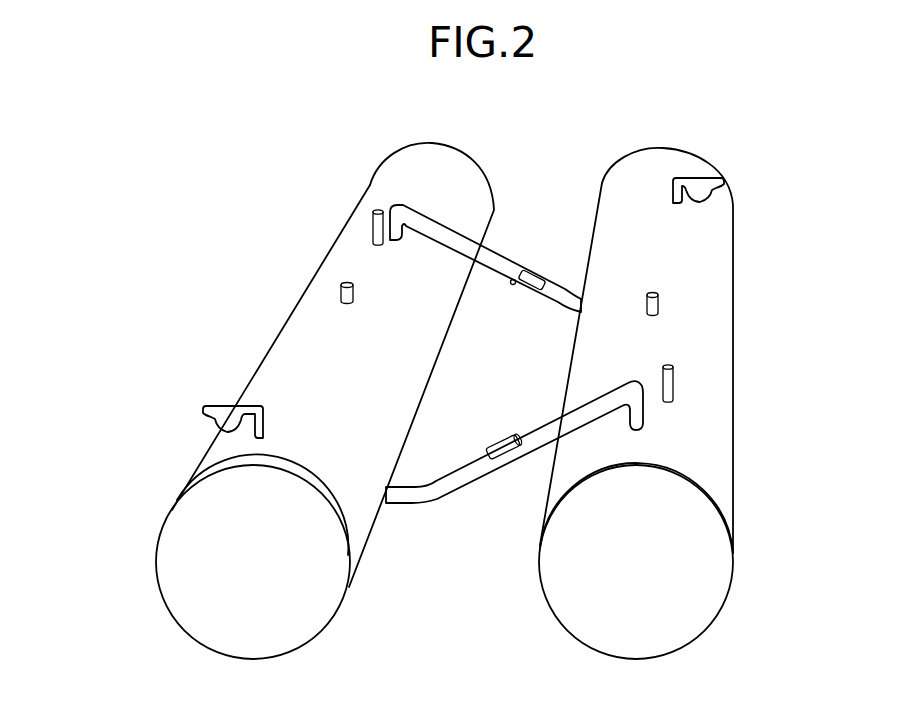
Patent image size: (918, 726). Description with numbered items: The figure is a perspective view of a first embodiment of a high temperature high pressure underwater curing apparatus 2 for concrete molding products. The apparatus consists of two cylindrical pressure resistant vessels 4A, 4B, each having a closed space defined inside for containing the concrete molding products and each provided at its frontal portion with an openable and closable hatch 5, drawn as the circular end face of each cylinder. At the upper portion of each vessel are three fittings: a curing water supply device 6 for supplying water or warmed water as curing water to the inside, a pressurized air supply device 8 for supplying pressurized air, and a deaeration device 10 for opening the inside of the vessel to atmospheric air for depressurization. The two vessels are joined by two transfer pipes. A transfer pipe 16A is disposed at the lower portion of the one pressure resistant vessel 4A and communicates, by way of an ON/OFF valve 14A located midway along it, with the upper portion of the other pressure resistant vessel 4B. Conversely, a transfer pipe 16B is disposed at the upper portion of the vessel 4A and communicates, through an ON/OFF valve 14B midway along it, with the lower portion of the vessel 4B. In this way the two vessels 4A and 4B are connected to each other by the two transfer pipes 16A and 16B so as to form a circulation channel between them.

The high temperature high pressure underwater curing apparatus 2 is at (293, 169).
The pressure resistant vessel 4A is at (287, 320).
The pressure resistant vessel 4B is at (720, 252).
The hatch 5 is at (180, 525).
The curing water supply device 6 is at (373, 228).
The pressurized air supply device 8 is at (340, 293).
The deaeration device 10 is at (215, 404).
The ON/OFF valve 14A is at (493, 439).
The ON/OFF valve 14B is at (547, 276).
The transfer pipe 16A is at (457, 491).
The transfer pipe 16B is at (512, 262).